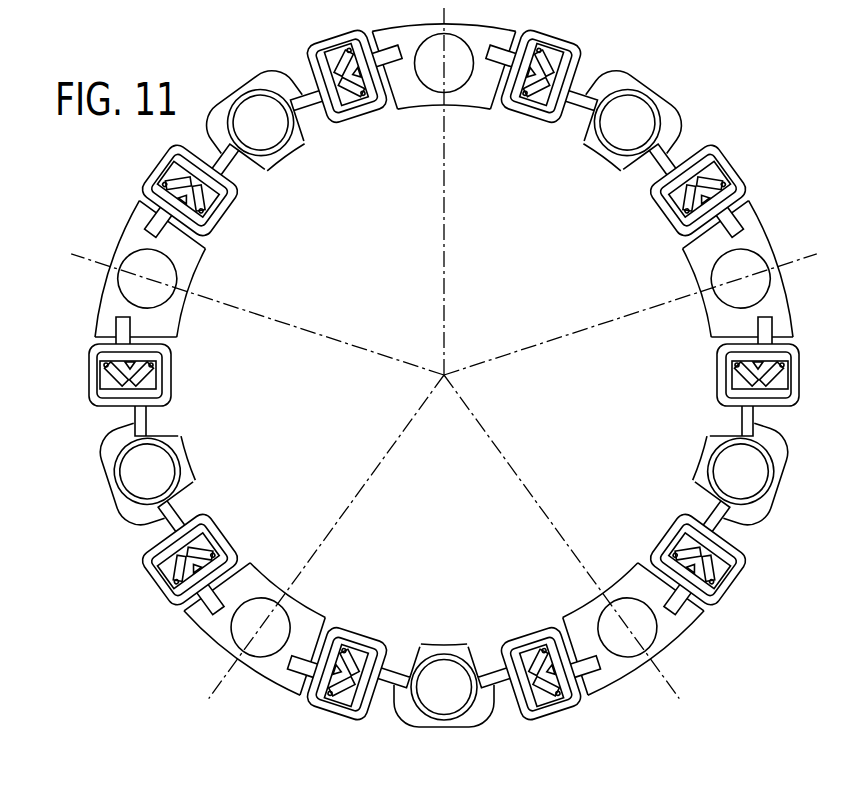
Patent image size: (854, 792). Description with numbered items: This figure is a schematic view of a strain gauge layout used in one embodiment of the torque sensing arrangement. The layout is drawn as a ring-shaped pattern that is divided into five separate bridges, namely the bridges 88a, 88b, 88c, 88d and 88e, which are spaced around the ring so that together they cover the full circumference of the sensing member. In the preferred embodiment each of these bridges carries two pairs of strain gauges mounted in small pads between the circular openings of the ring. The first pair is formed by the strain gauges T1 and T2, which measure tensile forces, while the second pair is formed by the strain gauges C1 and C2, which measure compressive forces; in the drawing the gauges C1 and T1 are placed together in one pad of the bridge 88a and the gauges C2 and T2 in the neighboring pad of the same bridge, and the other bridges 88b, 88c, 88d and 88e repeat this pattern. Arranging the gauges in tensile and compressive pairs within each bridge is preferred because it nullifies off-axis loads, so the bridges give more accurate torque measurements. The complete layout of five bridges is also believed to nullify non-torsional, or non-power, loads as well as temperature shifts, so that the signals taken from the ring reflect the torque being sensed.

The bridge 88a is at (568, 140).
The bridge 88b is at (754, 602).
The bridge 88c is at (290, 716).
The bridge 88d is at (148, 603).
The bridge 88e is at (207, 65).
The strain gauge C1 is at (556, 65).
The strain gauge C2 is at (664, 190).
The strain gauge T1 is at (546, 100).
The strain gauge T2 is at (716, 156).